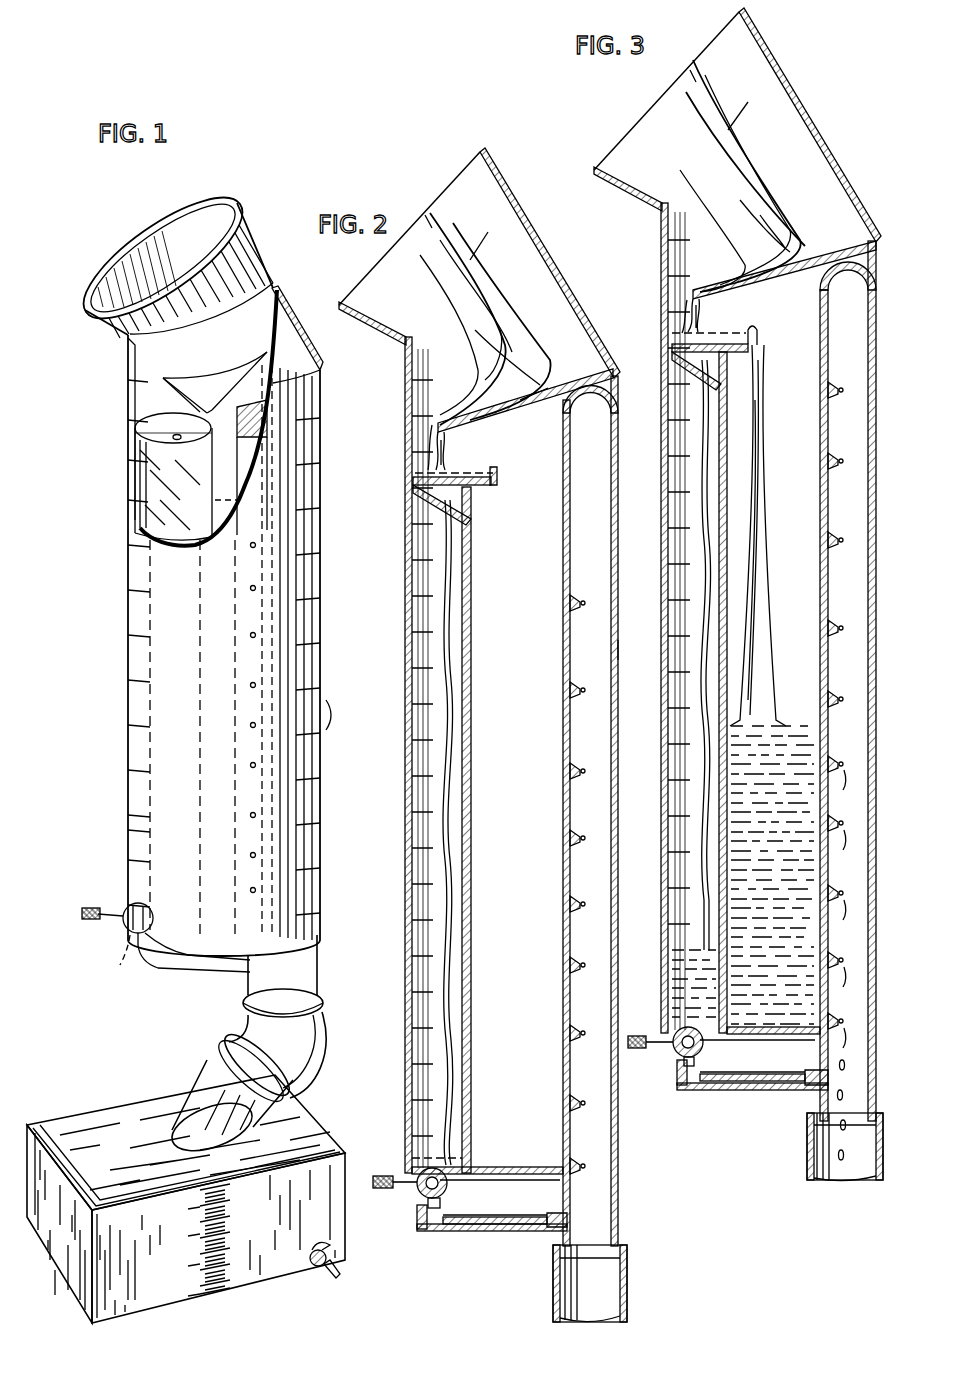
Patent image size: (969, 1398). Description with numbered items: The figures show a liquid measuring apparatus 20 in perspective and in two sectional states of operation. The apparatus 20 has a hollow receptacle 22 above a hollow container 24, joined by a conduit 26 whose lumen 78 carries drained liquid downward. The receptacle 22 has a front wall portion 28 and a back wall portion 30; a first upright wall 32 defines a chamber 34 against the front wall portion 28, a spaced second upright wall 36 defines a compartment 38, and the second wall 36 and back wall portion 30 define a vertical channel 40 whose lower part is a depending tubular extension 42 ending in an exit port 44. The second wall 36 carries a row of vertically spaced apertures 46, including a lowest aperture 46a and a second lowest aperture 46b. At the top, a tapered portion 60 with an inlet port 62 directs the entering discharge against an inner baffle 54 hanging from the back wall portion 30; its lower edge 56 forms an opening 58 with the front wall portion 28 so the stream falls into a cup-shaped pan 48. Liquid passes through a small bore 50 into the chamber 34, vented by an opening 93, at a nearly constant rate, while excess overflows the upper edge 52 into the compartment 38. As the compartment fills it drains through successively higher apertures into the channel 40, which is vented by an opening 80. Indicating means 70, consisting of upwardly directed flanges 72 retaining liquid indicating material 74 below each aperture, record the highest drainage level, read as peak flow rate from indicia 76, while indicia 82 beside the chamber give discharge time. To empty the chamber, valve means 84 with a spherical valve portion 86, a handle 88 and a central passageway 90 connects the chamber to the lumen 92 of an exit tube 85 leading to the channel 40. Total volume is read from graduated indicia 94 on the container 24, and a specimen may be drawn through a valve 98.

In FIG. 1, the apparatus 20 is at (205, 748).
In FIG. 2, the apparatus 20 is at (511, 724).
In FIG. 3, the apparatus 20 is at (755, 615).
In FIG. 1, the receptacle 22 is at (217, 327).
In FIG. 2, the receptacle 22 is at (487, 252).
In FIG. 3, the receptacle 22 is at (745, 125).
In FIG. 1, the container 24 is at (272, 1288).
In FIG. 1, the conduit 26 is at (195, 1095).
In FIG. 2, the conduit 26 is at (628, 1303).
In FIG. 3, the conduit 26 is at (812, 1176).
In FIG. 1, the front wall portion 28 is at (130, 660).
In FIG. 2, the front wall portion 28 is at (406, 686).
In FIG. 3, the front wall portion 28 is at (662, 478).
In FIG. 1, the back wall portion 30 is at (320, 662).
In FIG. 2, the back wall portion 30 is at (612, 650).
In FIG. 3, the back wall portion 30 is at (868, 520).
In FIG. 1, the first upright wall 32 is at (212, 490).
In FIG. 2, the first upright wall 32 is at (472, 608).
In FIG. 3, the first upright wall 32 is at (728, 470).
In FIG. 1, the chamber 34 is at (148, 505).
In FIG. 2, the chamber 34 is at (410, 606).
In FIG. 3, the chamber 34 is at (712, 506).
In FIG. 1, the second upright wall 36 is at (245, 434).
In FIG. 2, the second upright wall 36 is at (562, 558).
In FIG. 3, the second upright wall 36 is at (818, 435).
In FIG. 1, the compartment 38 is at (232, 510).
In FIG. 2, the compartment 38 is at (494, 720).
In FIG. 3, the compartment 38 is at (808, 405).
In FIG. 1, the vertical channel 40 is at (305, 555).
In FIG. 2, the vertical channel 40 is at (613, 548).
In FIG. 3, the vertical channel 40 is at (866, 425).
In FIG. 1, the tubular extension 42 is at (315, 962).
In FIG. 2, the tubular extension 42 is at (612, 1218).
In FIG. 3, the tubular extension 42 is at (872, 1090).
In FIG. 2, the exit port 44 is at (592, 1258).
In FIG. 1, the apertures 46 is at (252, 722).
In FIG. 2, the apertures 46 is at (585, 884).
In FIG. 3, the apertures 46 is at (837, 771).
In FIG. 2, the lowest aperture 46a is at (568, 1158).
In FIG. 3, the lowest aperture 46a is at (826, 1012).
In FIG. 2, the second lowest aperture 46b is at (568, 1100).
In FIG. 3, the second lowest aperture 46b is at (826, 952).
In FIG. 1, the cup-shaped pan 48 is at (147, 425).
In FIG. 2, the cup-shaped pan 48 is at (478, 490).
In FIG. 3, the cup-shaped pan 48 is at (750, 349).
In FIG. 1, the bore 50 is at (175, 437).
In FIG. 2, the bore 50 is at (489, 830).
In FIG. 3, the bore 50 is at (746, 388).
In FIG. 1, the upper edge 52 is at (200, 420).
In FIG. 2, the upper edge 52 is at (497, 466).
In FIG. 1, the inner baffle 54 is at (232, 372).
In FIG. 2, the inner baffle 54 is at (565, 390).
In FIG. 3, the inner baffle 54 is at (808, 252).
In FIG. 1, the lower edge 56 is at (168, 392).
In FIG. 2, the lower edge 56 is at (437, 425).
In FIG. 3, the lower edge 56 is at (693, 288).
In FIG. 1, the opening 58 is at (140, 385).
In FIG. 2, the opening 58 is at (392, 755).
In FIG. 1, the tapered portion 60 is at (236, 215).
In FIG. 2, the tapered portion 60 is at (498, 198).
In FIG. 3, the tapered portion 60 is at (780, 78).
In FIG. 1, the inlet port 62 is at (168, 228).
In FIG. 2, the inlet port 62 is at (452, 182).
In FIG. 3, the inlet port 62 is at (626, 142).
In FIG. 2, the indicating means 70 is at (582, 682).
In FIG. 3, the indicating means 70 is at (842, 620).
In FIG. 2, the flanges 72 is at (606, 1000).
In FIG. 3, the flanges 72 is at (840, 536).
In FIG. 2, the liquid indicating material 74 is at (578, 772).
In FIG. 3, the liquid indicating material 74 is at (842, 698).
In FIG. 1, the indicia 76 is at (338, 714).
In FIG. 1, the lumen 78 is at (285, 1085).
In FIG. 2, the lumen 78 is at (612, 1292).
In FIG. 3, the lumen 78 is at (826, 1145).
In FIG. 2, the opening 80 is at (590, 811).
In FIG. 3, the opening 80 is at (846, 681).
In FIG. 1, the indicia 82 is at (136, 762).
In FIG. 1, the valve means 84 is at (130, 930).
In FIG. 2, the valve means 84 is at (416, 1212).
In FIG. 3, the valve means 84 is at (676, 1065).
In FIG. 1, the exit tube 85 is at (170, 990).
In FIG. 2, the exit tube 85 is at (498, 1235).
In FIG. 3, the exit tube 85 is at (758, 1092).
In FIG. 1, the spherical valve portion 86 is at (128, 960).
In FIG. 2, the spherical valve portion 86 is at (420, 1190).
In FIG. 3, the spherical valve portion 86 is at (678, 1052).
In FIG. 1, the handle 88 is at (110, 910).
In FIG. 2, the handle 88 is at (395, 1176).
In FIG. 3, the handle 88 is at (637, 1035).
In FIG. 1, the passageway 90 is at (190, 985).
In FIG. 2, the passageway 90 is at (445, 1184).
In FIG. 3, the passageway 90 is at (702, 1048).
In FIG. 2, the lumen 92 is at (478, 1235).
In FIG. 3, the lumen 92 is at (705, 1090).
In FIG. 2, the opening 93 is at (412, 496).
In FIG. 3, the opening 93 is at (670, 354).
In FIG. 1, the graduated indicia 94 is at (233, 1250).
In FIG. 1, the valve 98 is at (337, 1280).